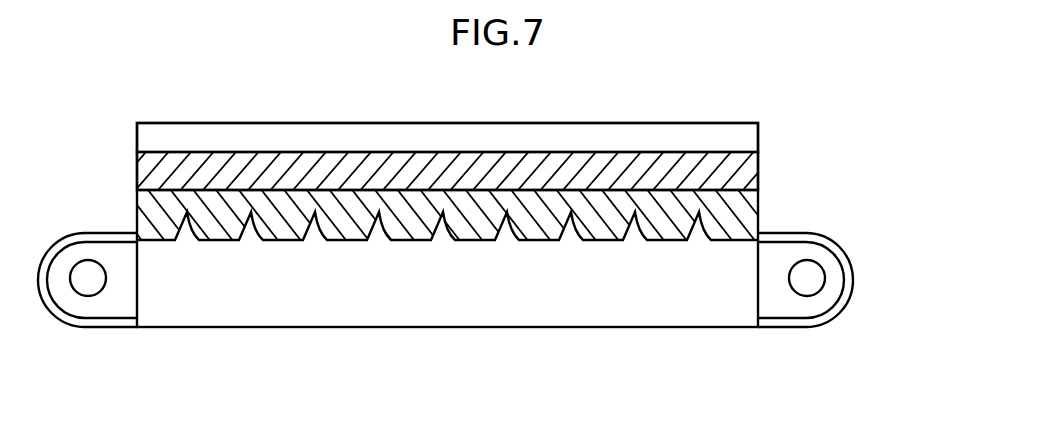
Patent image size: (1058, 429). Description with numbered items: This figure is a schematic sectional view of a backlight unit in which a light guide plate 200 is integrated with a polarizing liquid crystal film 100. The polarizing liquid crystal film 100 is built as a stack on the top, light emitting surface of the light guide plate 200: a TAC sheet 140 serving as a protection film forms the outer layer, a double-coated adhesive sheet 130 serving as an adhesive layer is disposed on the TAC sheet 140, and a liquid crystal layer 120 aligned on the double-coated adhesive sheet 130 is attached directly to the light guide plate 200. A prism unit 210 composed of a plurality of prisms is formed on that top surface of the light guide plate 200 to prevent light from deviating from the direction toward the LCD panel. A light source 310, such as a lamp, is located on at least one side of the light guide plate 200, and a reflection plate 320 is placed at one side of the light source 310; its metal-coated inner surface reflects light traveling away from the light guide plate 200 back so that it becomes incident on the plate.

The polarizing liquid crystal film 100 is at (505, 181).
The liquid crystal layer 120 is at (747, 206).
The double-coated adhesive sheet 130 is at (747, 168).
The TAC sheet 140 is at (747, 137).
The light guide plate 200 is at (452, 290).
The prism unit 210 is at (701, 232).
The light source 310 is at (810, 282).
The reflection plate 320 is at (852, 276).